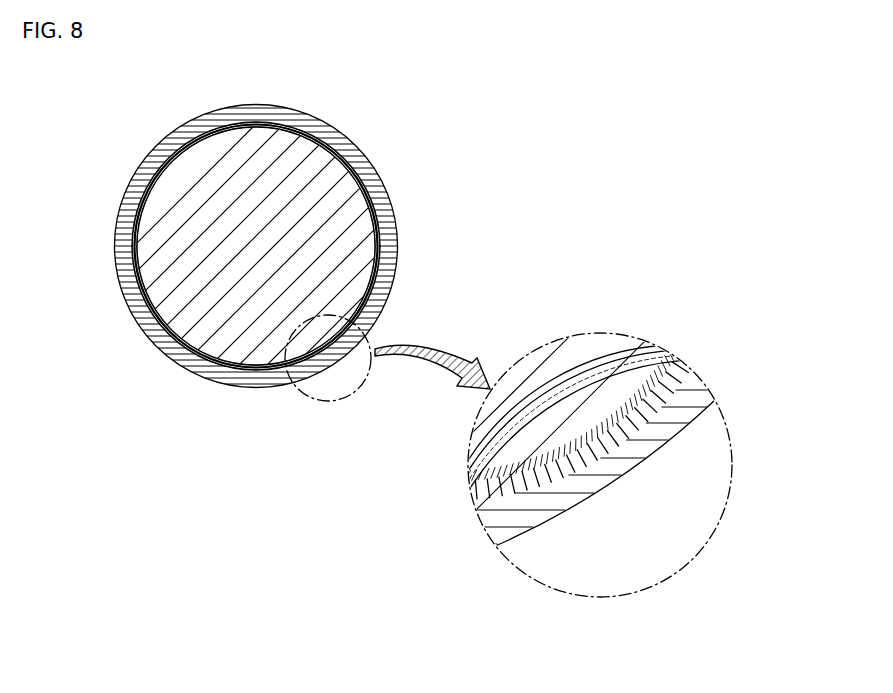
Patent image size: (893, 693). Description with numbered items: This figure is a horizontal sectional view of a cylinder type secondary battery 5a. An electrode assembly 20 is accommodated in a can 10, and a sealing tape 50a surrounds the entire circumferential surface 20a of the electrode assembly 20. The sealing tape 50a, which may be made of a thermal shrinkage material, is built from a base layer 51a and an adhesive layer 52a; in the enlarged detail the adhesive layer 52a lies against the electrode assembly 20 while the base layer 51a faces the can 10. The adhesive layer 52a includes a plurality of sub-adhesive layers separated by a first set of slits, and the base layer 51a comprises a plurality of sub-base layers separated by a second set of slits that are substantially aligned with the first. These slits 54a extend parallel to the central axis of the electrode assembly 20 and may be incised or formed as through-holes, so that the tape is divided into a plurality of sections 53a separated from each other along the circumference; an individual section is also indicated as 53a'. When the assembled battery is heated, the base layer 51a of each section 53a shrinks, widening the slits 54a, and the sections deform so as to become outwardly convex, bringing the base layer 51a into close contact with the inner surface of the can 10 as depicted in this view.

The secondary battery 5a is at (392, 134).
The can 10 is at (258, 112).
The electrode assembly 20 is at (188, 160).
The circumferential surface 20a is at (288, 127).
The sealing tape 50a is at (220, 120).
The base layer 51a is at (652, 405).
The adhesive layer 52a is at (670, 348).
The section 53a is at (598, 472).
The partition wall 53a' is at (722, 459).
The slit 54a is at (652, 400).